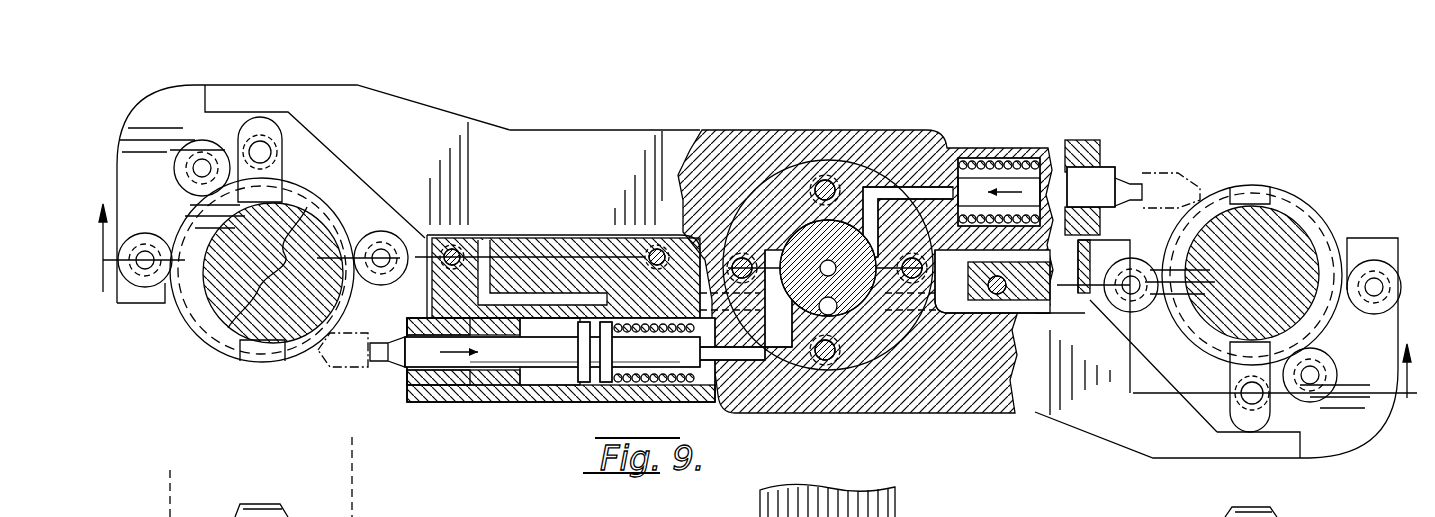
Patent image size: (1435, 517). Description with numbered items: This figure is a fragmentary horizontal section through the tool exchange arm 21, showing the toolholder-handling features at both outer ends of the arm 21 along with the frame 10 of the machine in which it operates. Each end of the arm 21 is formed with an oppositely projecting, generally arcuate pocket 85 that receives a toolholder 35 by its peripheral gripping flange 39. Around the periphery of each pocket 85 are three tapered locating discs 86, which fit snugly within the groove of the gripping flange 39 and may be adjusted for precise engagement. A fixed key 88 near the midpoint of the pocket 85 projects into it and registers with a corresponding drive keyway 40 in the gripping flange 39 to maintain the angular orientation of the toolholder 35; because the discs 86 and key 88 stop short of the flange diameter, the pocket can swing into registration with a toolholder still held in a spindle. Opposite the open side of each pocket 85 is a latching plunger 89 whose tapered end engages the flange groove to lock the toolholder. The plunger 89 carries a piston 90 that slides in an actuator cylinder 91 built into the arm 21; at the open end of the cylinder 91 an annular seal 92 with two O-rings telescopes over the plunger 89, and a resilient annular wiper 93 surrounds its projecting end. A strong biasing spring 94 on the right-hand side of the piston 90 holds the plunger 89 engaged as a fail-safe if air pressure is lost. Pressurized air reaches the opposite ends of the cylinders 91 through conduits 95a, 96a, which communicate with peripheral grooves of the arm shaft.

The housing 10 is at (743, 271).
The tool exchange arm 21 is at (968, 432).
The toolholder 35 is at (212, 351).
The gripping flange 39 is at (185, 316).
The drive keyway 40 is at (303, 166).
The pocket 85 is at (330, 196).
The locating disc 86 is at (178, 240).
The fixed key 88 is at (283, 135).
The latching plunger 89 is at (362, 370).
The piston 90 is at (584, 398).
The actuator cylinder 91 is at (530, 401).
The annular seal 92 is at (446, 400).
The annular wiper 93 is at (385, 378).
The biasing spring 94 is at (632, 398).
The conduit 95a is at (815, 262).
The conduit 96a is at (832, 314).